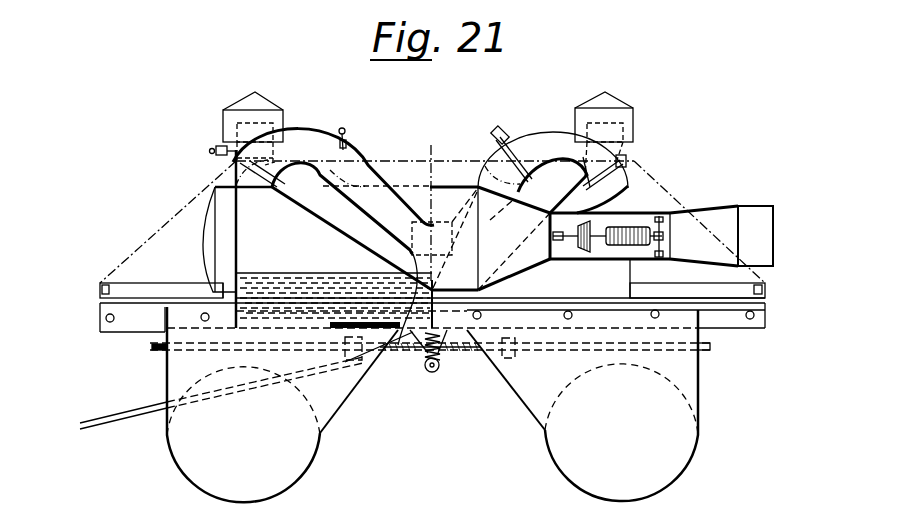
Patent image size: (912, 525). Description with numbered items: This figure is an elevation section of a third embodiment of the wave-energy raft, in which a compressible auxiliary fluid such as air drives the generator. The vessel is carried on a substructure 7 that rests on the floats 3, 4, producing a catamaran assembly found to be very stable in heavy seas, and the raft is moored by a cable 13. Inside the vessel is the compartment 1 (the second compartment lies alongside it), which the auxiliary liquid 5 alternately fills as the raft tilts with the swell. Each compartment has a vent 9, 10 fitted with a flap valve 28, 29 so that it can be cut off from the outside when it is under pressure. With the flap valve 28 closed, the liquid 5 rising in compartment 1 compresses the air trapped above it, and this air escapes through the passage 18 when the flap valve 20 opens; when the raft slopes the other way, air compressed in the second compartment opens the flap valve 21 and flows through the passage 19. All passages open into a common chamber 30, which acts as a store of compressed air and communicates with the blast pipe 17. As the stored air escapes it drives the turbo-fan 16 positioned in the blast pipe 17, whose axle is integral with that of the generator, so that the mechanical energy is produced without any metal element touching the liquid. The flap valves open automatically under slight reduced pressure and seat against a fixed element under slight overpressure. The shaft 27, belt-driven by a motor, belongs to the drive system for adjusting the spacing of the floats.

The compartment 1 is at (257, 243).
The float 3 is at (298, 462).
The float 4 is at (650, 490).
The auxiliary liquid 5 is at (320, 290).
The substructure 7 is at (735, 312).
The vent 9 is at (272, 112).
The vent 10 is at (620, 113).
The cable 13 is at (120, 415).
The turbo-fan 16 is at (618, 193).
The blast pipe 17 is at (755, 224).
The passage 18 is at (321, 133).
The passage 19 is at (550, 143).
The flap valve 20 is at (352, 162).
The flap valve 21 is at (515, 145).
The shaft 27 is at (438, 371).
The flap valve 28 is at (247, 152).
The flap valve 29 is at (623, 166).
The chamber 30 is at (397, 353).